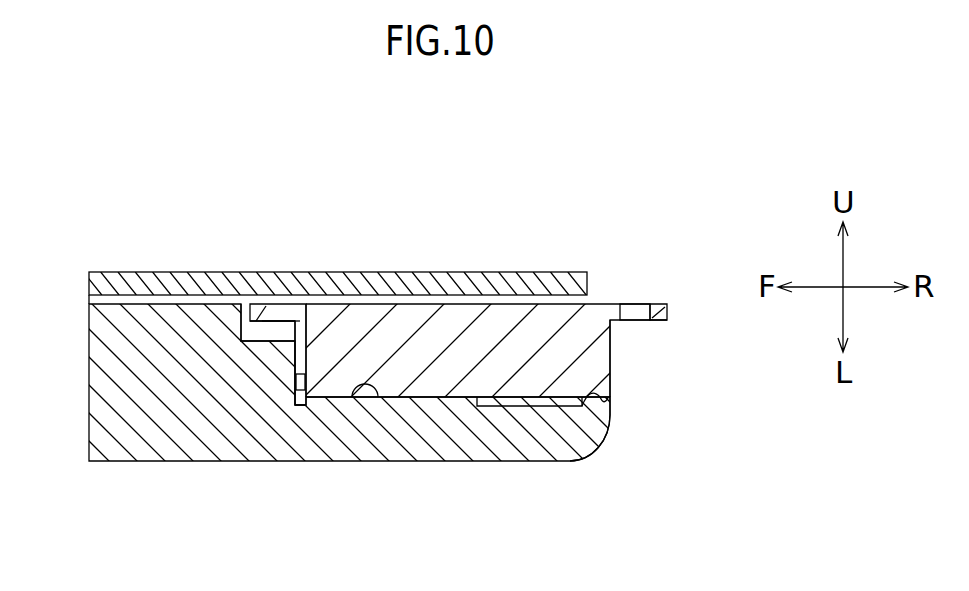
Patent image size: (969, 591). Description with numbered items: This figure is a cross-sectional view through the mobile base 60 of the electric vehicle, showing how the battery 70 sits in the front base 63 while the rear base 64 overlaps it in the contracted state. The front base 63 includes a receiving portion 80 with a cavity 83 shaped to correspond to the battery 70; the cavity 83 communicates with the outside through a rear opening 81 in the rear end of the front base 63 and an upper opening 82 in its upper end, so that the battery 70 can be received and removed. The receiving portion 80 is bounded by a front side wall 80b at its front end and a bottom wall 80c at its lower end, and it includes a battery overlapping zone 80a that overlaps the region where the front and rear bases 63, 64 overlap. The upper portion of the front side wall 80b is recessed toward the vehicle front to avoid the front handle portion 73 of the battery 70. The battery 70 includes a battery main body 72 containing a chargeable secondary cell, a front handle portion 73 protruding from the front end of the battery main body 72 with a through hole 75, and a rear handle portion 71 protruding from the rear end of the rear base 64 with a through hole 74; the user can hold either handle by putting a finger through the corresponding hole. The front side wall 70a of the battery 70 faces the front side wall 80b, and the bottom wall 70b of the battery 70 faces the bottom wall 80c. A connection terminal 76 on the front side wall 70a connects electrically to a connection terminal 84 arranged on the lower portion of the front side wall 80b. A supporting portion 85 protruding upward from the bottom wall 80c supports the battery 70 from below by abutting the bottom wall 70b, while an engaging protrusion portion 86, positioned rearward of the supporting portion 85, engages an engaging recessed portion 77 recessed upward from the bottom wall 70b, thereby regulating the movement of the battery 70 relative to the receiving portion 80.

The mobile base 60 is at (114, 261).
The rear base 64 is at (177, 272).
The front base 63 is at (87, 405).
The battery 70 is at (601, 289).
The front side wall of the battery 70a is at (297, 350).
The bottom wall of the battery 70b is at (505, 400).
The rear handle portion 71 is at (663, 305).
The battery main body 72 is at (445, 352).
The front handle portion 73 is at (268, 318).
The through hole 74 is at (638, 310).
The through hole 75 is at (290, 318).
The connection terminal 76 is at (303, 406).
The engaging recessed portion 77 is at (585, 405).
The receiving portion 80 is at (480, 397).
The battery overlapping zone 80a is at (308, 358).
The front side wall of the receiving portion 80b is at (336, 270).
The bottom wall of the receiving portion 80c is at (540, 402).
The rear opening 81 is at (610, 398).
The upper opening 82 is at (258, 318).
The cavity 83 is at (296, 336).
The connection terminal 84 is at (292, 392).
The supporting portion 85 is at (352, 397).
The engaging protrusion portion 86 is at (610, 362).